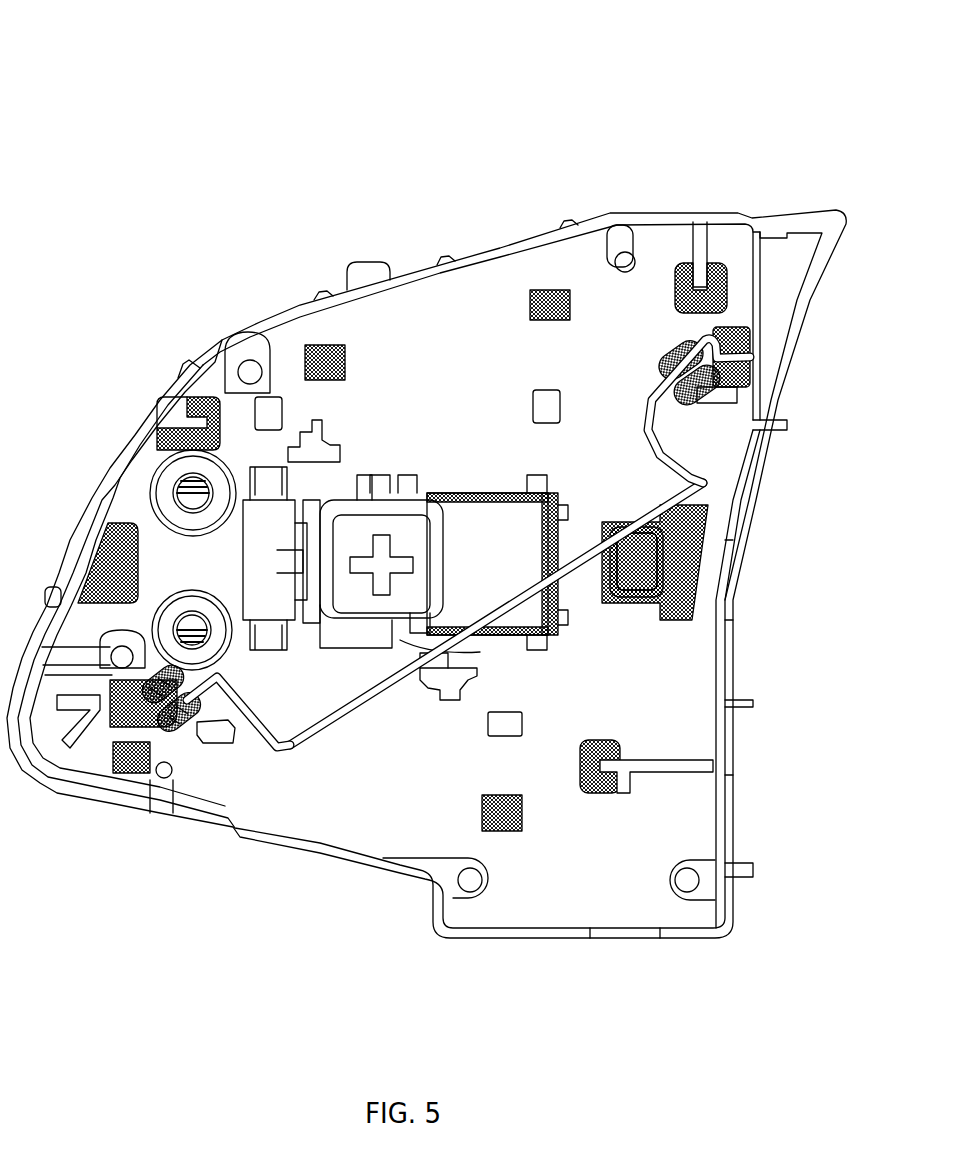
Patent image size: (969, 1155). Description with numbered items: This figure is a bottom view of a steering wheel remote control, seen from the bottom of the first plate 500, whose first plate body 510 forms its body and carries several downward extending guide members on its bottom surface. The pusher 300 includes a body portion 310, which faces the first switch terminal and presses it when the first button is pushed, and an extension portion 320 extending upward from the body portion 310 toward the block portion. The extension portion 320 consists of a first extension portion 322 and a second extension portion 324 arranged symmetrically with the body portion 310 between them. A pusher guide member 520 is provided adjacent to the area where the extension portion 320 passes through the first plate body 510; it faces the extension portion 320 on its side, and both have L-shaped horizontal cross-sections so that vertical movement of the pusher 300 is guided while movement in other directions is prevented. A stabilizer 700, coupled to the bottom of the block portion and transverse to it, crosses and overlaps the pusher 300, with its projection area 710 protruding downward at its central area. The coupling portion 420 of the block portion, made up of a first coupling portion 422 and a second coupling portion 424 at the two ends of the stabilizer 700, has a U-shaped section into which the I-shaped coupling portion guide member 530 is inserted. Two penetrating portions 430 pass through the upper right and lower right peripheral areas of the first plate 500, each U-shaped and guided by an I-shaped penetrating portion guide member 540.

The pusher 300 is at (461, 535).
The body portion 310 is at (418, 578).
The extension portion 320 is at (92, 126).
The first extension portion 322 is at (370, 462).
The second extension portion 324 is at (423, 645).
The coupling portion 420 is at (92, 22).
The first coupling portion 422 is at (183, 723).
The second coupling portion 424 is at (703, 390).
The penetrating portion 430 is at (710, 292).
The first plate 500 is at (603, 184).
The first plate body 510 is at (368, 838).
The pusher guide member 520 is at (310, 440).
The coupling portion guide member 530 is at (743, 357).
The penetrating portion guide member 540 is at (700, 252).
The stabilizer 700 is at (265, 772).
The projection area 710 is at (307, 737).